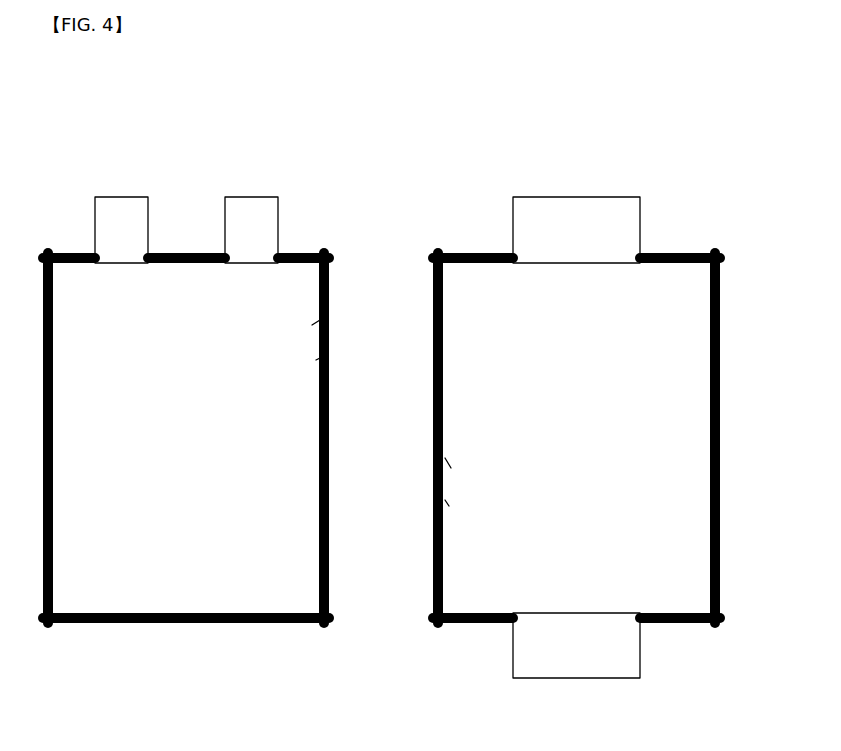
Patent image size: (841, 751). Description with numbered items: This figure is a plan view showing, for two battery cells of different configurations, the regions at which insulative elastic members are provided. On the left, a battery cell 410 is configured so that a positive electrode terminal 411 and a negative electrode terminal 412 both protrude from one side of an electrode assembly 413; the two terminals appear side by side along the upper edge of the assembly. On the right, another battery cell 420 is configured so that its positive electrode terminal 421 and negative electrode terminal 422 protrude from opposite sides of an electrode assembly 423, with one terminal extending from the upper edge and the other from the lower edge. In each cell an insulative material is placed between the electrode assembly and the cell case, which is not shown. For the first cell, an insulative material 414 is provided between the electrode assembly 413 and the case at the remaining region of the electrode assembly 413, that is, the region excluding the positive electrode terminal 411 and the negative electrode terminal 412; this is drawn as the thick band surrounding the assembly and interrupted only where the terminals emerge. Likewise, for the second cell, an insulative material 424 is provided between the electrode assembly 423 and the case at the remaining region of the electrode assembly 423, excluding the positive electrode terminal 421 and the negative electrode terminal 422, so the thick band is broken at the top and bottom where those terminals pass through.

The battery cell 410 is at (199, 143).
The positive electrode terminal 411 is at (130, 212).
The negative electrode terminal 412 is at (262, 211).
The electrode assembly 413 is at (330, 307).
The insulative material 414 is at (330, 358).
The battery cell 420 is at (572, 143).
The positive electrode terminal 421 is at (620, 213).
The negative electrode terminal 422 is at (624, 662).
The electrode assembly 423 is at (434, 441).
The insulative material 424 is at (434, 500).